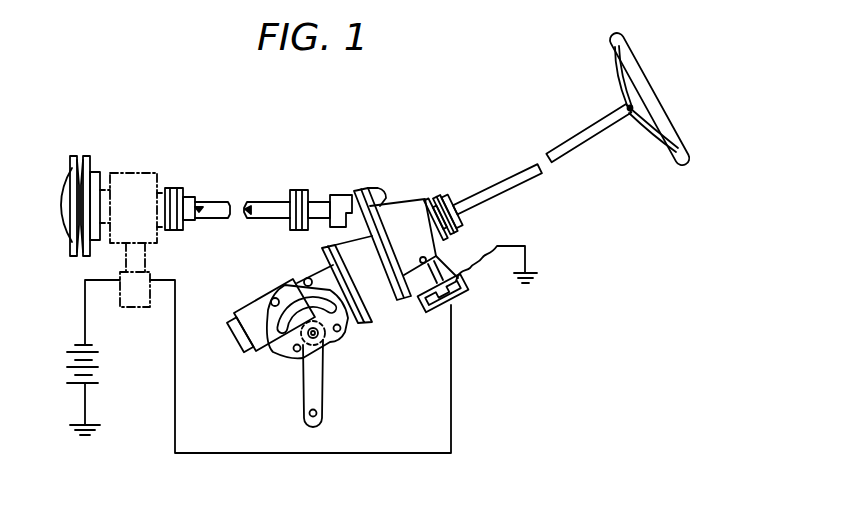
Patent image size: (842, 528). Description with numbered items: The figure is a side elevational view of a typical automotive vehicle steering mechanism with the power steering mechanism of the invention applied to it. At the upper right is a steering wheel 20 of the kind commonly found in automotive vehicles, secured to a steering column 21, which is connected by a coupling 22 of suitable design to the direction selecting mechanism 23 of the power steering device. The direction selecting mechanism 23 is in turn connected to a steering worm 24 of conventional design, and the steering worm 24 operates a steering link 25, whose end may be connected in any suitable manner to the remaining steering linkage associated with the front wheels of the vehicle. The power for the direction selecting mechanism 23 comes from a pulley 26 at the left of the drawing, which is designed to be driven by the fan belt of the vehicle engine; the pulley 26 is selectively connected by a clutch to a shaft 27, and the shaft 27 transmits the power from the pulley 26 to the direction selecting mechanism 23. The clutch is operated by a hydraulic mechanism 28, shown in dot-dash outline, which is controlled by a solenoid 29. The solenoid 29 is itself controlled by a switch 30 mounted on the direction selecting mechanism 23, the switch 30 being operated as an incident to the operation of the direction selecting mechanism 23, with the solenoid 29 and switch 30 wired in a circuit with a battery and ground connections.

The steering wheel 20 is at (688, 155).
The steering column 21 is at (565, 157).
The coupling 22 is at (449, 198).
The direction selecting mechanism 23 is at (390, 219).
The steering worm 24 is at (253, 312).
The steering link 25 is at (317, 385).
The pulley 26 is at (72, 172).
The shaft 27 is at (262, 204).
The hydraulic mechanism 28 is at (150, 182).
The solenoid 29 is at (135, 308).
The switch 30 is at (462, 292).